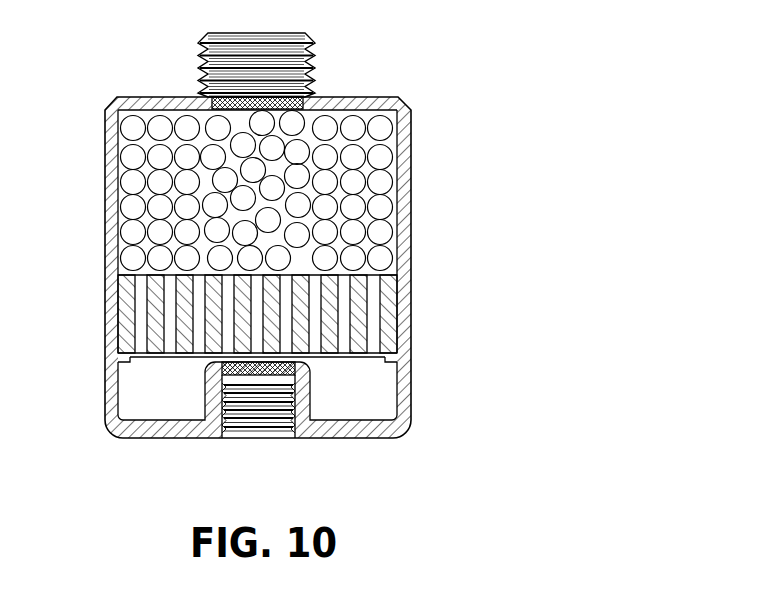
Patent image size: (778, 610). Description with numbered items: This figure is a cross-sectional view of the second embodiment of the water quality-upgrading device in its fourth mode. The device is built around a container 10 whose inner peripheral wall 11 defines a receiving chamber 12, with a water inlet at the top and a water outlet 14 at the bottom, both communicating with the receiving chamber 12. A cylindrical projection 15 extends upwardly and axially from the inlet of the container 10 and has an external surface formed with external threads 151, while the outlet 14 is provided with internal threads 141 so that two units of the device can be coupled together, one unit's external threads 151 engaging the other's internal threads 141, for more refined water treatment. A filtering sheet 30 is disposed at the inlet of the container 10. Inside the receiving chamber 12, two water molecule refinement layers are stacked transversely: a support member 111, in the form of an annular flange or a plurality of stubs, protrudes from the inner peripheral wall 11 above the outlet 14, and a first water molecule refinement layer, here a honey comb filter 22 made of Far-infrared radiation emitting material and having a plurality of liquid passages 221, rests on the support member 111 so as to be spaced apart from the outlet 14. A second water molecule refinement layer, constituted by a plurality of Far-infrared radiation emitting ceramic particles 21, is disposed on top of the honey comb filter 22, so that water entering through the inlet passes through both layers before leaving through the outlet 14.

The container 10 is at (282, 250).
The inner peripheral wall 11 is at (311, 267).
The receiving chamber 12 is at (372, 112).
The water outlet 14 is at (280, 431).
The internal threads 141 is at (245, 430).
The cylindrical projection 15 is at (294, 48).
The external threads 151 is at (313, 48).
The Far-infrared radiation emitting ceramic particles 21 is at (390, 133).
The honey comb filter 22 is at (317, 317).
The liquid passages 221 is at (387, 345).
The support member 111 is at (390, 357).
The filtering sheet 30 is at (228, 118).